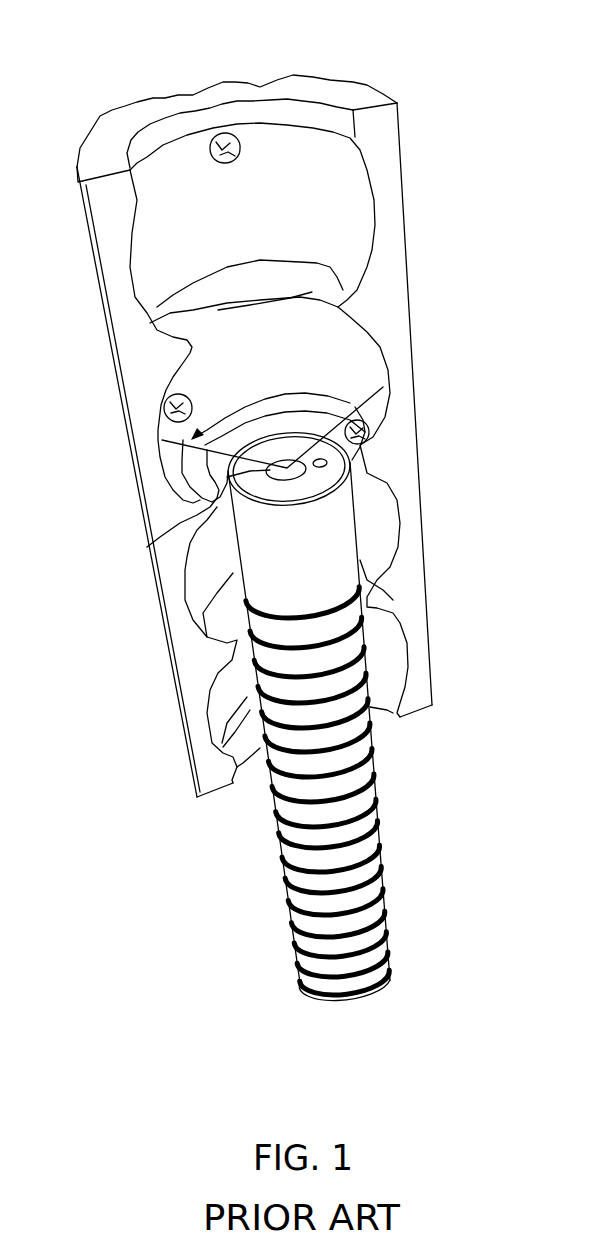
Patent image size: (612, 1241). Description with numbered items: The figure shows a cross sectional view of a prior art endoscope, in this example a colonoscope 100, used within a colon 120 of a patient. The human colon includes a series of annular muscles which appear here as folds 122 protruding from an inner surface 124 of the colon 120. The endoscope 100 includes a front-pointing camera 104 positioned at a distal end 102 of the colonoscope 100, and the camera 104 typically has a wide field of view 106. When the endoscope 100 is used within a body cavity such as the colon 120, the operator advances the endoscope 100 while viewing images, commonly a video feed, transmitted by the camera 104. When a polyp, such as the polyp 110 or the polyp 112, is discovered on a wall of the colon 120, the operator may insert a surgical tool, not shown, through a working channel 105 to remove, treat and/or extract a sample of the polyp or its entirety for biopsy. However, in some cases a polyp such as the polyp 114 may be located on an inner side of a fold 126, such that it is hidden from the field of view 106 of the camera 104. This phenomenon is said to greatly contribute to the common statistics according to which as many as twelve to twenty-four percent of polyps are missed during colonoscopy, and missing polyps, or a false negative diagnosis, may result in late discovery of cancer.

The colonoscope 100 is at (351, 731).
The distal end 102 is at (330, 465).
The front-pointing camera 104 is at (109, 537).
The working channel 105 is at (403, 464).
The field of view 106 is at (273, 408).
The polyp 110 is at (210, 378).
The polyp 112 is at (207, 183).
The polyp 114 is at (419, 426).
The colon 120 is at (254, 401).
The folds 122 is at (259, 316).
The inner surface 124 is at (268, 309).
The fold 126 is at (435, 395).